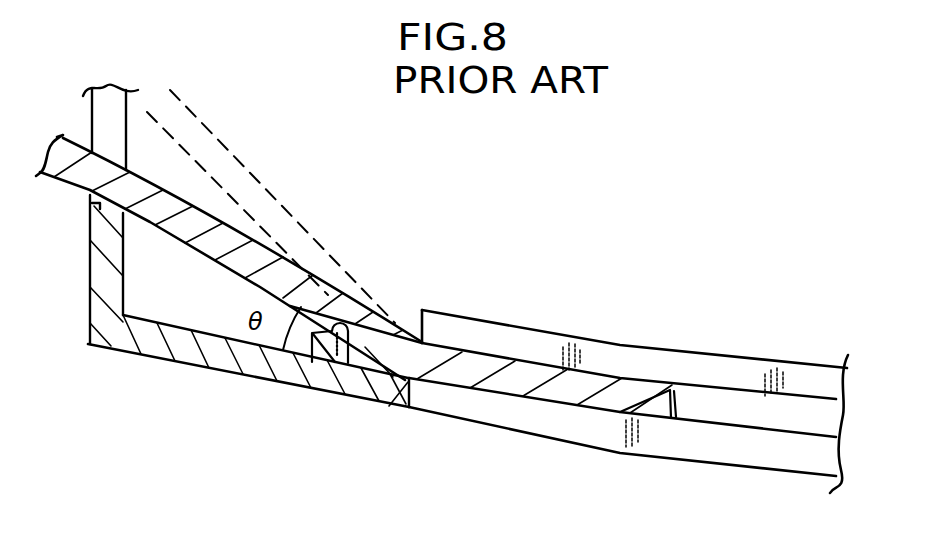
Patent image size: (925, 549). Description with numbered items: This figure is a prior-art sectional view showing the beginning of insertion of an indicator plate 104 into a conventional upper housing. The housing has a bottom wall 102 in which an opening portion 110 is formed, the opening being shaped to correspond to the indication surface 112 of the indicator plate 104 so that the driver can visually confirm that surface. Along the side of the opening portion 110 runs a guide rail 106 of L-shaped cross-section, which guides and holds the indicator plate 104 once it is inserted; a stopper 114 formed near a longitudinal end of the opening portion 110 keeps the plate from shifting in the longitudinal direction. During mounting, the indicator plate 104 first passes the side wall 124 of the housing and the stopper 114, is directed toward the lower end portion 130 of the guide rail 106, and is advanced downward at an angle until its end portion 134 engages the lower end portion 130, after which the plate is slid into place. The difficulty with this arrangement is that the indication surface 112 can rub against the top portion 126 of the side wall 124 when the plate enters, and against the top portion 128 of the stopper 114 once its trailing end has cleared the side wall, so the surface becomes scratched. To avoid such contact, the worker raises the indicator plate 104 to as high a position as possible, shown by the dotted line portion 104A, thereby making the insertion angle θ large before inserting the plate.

The bottom wall 102 is at (133, 362).
The indicator plate 104 is at (168, 192).
The dotted line portion 104A is at (293, 212).
The guide rail 106 is at (627, 357).
The opening portion 110 is at (573, 423).
The indication surface 112 is at (190, 256).
The stopper 114 is at (267, 389).
The side wall 124 is at (90, 287).
The top portion of the side wall 126 is at (93, 208).
The top portion of the stopper 128 is at (328, 396).
The lower end portion of the guide rail 130 is at (388, 410).
The end portion of the indicator plate 134 is at (680, 418).